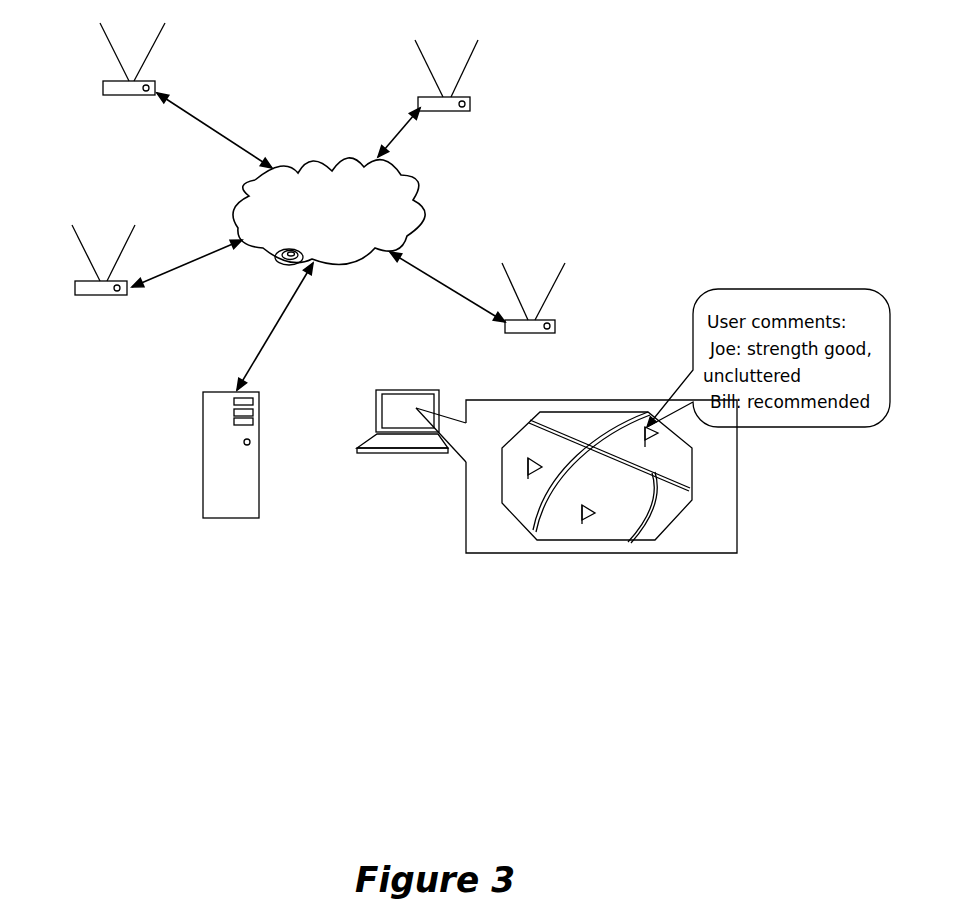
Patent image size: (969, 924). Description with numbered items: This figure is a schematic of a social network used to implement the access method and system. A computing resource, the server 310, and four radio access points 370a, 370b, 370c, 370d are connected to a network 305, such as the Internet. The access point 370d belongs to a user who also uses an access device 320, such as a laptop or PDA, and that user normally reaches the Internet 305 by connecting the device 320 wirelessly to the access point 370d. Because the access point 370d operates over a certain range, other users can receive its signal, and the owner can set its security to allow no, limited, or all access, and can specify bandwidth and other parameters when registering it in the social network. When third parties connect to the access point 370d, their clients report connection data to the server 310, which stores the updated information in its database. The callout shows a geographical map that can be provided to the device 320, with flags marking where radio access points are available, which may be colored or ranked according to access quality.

The network 305 is at (329, 211).
The server 310 is at (203, 414).
The access device 320 is at (402, 390).
The radio access point 370a is at (98, 295).
The radio access point 370b is at (120, 96).
The radio access point 370c is at (440, 111).
The radio access point 370d is at (522, 333).